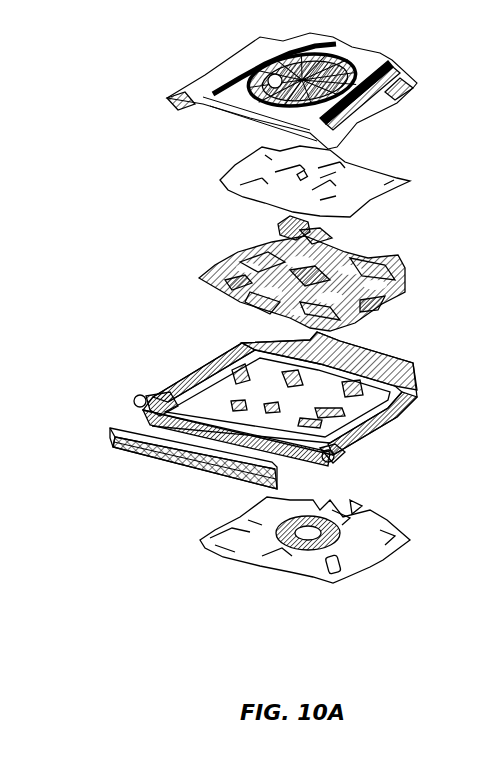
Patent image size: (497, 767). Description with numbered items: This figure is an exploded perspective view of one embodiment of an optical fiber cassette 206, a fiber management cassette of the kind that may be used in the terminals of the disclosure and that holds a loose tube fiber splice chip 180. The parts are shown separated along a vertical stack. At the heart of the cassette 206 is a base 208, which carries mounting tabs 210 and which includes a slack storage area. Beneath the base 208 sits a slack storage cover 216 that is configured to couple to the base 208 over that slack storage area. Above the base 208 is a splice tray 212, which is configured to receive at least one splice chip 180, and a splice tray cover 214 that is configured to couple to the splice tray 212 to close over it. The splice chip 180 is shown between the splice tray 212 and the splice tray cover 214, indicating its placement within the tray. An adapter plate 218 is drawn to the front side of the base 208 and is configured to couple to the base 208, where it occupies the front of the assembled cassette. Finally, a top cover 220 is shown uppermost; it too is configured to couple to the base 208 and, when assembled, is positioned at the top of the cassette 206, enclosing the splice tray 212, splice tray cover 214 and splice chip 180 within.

The optical fiber cassette 206 is at (128, 66).
The top cover 220 is at (398, 100).
The splice tray cover 214 is at (397, 184).
The splice chip 180 is at (275, 228).
The splice tray 212 is at (401, 298).
The base 208 is at (393, 413).
The mounting tabs 210 is at (134, 399).
The adapter plate 218 is at (280, 481).
The slack storage cover 216 is at (405, 540).